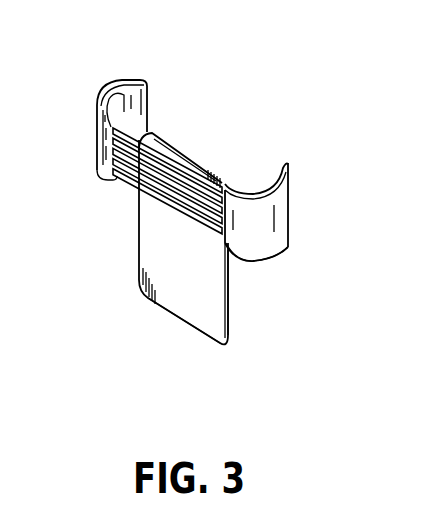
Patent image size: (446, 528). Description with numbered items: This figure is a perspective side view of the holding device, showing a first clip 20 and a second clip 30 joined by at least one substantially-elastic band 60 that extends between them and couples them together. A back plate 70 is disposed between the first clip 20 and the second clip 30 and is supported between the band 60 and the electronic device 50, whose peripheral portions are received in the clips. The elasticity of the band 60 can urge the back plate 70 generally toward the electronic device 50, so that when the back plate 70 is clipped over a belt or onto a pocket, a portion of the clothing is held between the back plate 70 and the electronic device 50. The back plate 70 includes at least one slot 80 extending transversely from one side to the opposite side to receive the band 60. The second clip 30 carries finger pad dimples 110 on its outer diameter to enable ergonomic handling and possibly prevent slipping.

The first clip 20 is at (97, 98).
The second clip 30 is at (292, 181).
The electronic device 50 is at (210, 322).
The substantially-elastic band 60 is at (218, 244).
The back plate 70 is at (138, 295).
The slot 80 is at (223, 173).
The finger pad dimples 110 is at (270, 237).